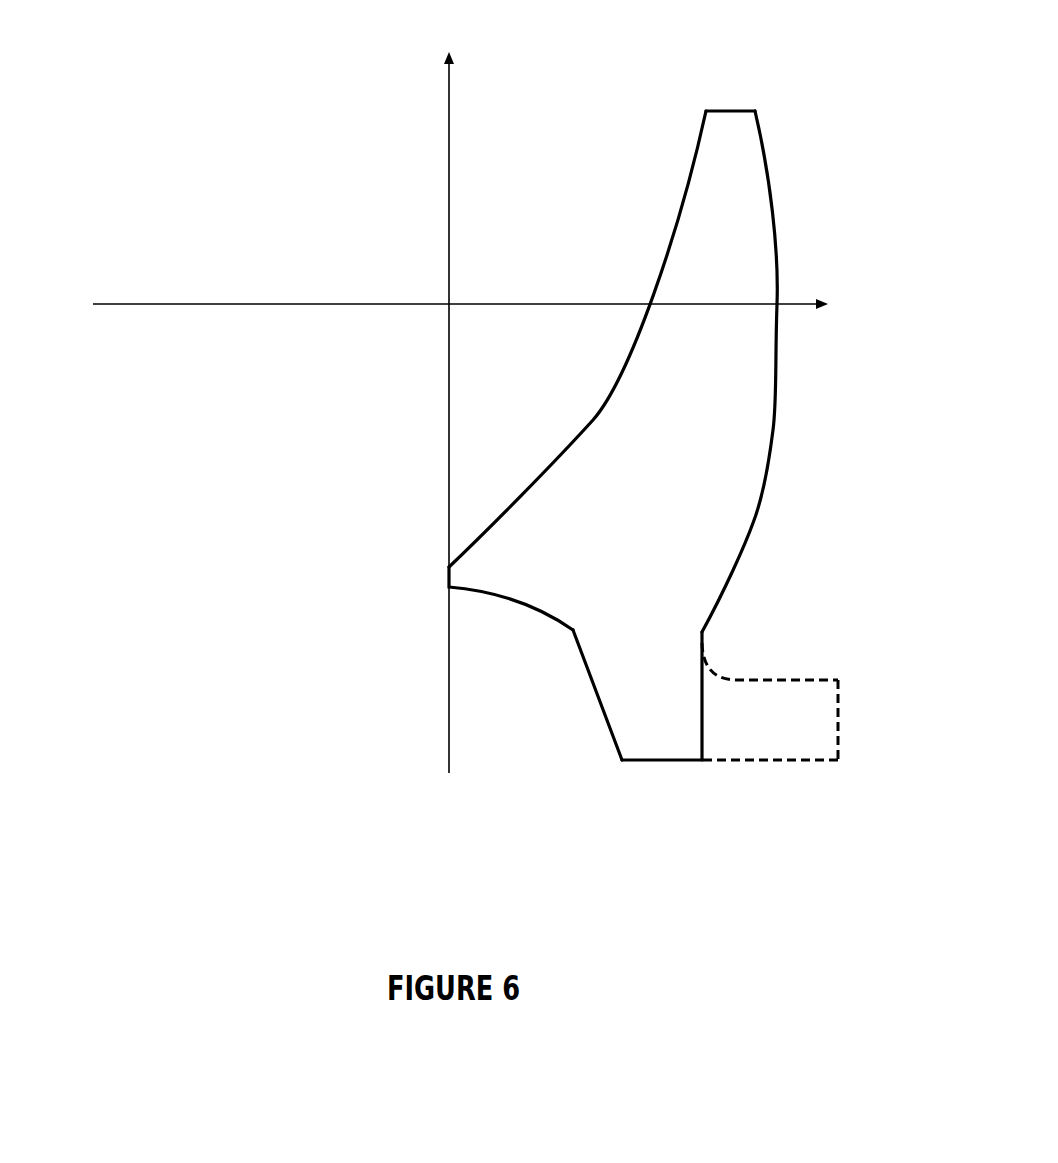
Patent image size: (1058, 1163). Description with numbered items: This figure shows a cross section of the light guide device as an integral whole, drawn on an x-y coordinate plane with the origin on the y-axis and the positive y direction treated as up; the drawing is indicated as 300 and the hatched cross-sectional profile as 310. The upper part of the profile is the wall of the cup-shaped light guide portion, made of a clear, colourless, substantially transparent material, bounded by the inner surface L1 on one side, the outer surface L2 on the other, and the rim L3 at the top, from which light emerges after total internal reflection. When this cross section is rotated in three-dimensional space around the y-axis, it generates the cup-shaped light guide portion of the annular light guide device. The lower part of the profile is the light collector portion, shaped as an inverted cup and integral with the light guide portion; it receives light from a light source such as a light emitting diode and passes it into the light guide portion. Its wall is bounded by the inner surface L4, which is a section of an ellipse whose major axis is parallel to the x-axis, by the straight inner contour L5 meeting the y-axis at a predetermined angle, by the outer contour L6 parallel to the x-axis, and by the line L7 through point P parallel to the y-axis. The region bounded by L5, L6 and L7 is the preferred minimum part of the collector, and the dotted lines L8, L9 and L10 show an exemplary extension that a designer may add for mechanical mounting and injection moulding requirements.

The airfoil profile coordinate view 300 is at (433, 401).
The airfoil cross-section profile 310 is at (737, 233).
The inner surface L1 is at (577, 339).
The outer surface L2 is at (759, 371).
The rim L3 is at (730, 91).
The inner surface of the inverted cup L4 is at (511, 601).
The inner contour L5 is at (590, 695).
The outer contour L6 is at (662, 779).
The line parallel to the y-axis from point P L7 is at (724, 696).
The extension L8 is at (770, 661).
The extension L9 is at (861, 720).
The extension L10 is at (770, 779).